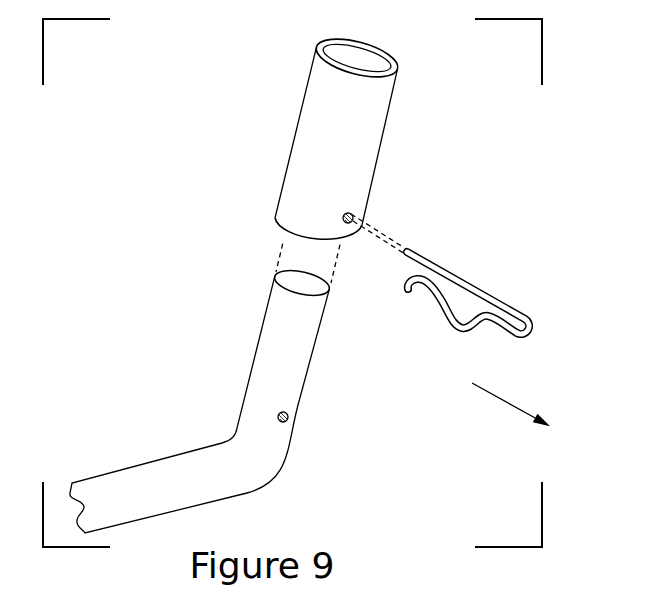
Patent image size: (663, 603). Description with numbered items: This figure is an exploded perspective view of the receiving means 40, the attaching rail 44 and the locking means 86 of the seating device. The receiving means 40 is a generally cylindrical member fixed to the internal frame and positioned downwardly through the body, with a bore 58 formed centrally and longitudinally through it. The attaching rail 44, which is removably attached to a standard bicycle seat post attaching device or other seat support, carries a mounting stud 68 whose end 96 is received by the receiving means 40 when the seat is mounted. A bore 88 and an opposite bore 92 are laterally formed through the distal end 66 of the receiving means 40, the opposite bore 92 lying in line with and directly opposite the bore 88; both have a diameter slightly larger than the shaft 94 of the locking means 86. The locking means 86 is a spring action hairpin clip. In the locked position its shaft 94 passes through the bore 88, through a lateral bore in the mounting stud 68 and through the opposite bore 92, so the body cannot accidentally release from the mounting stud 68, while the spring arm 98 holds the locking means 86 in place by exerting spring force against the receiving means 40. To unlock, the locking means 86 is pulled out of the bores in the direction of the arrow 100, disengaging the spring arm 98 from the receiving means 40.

The receiving means 40 is at (372, 157).
The bore 58 is at (360, 57).
The distal end 66 is at (275, 218).
The bore 88 is at (354, 217).
The mounting stud 68 is at (270, 365).
The end 96 is at (330, 287).
The attaching rail 44 is at (177, 452).
The opposite bore 92 is at (289, 421).
The locking means 86 is at (516, 309).
The shaft 94 is at (487, 276).
The spring arm 98 is at (462, 324).
The arrow 100 is at (498, 398).